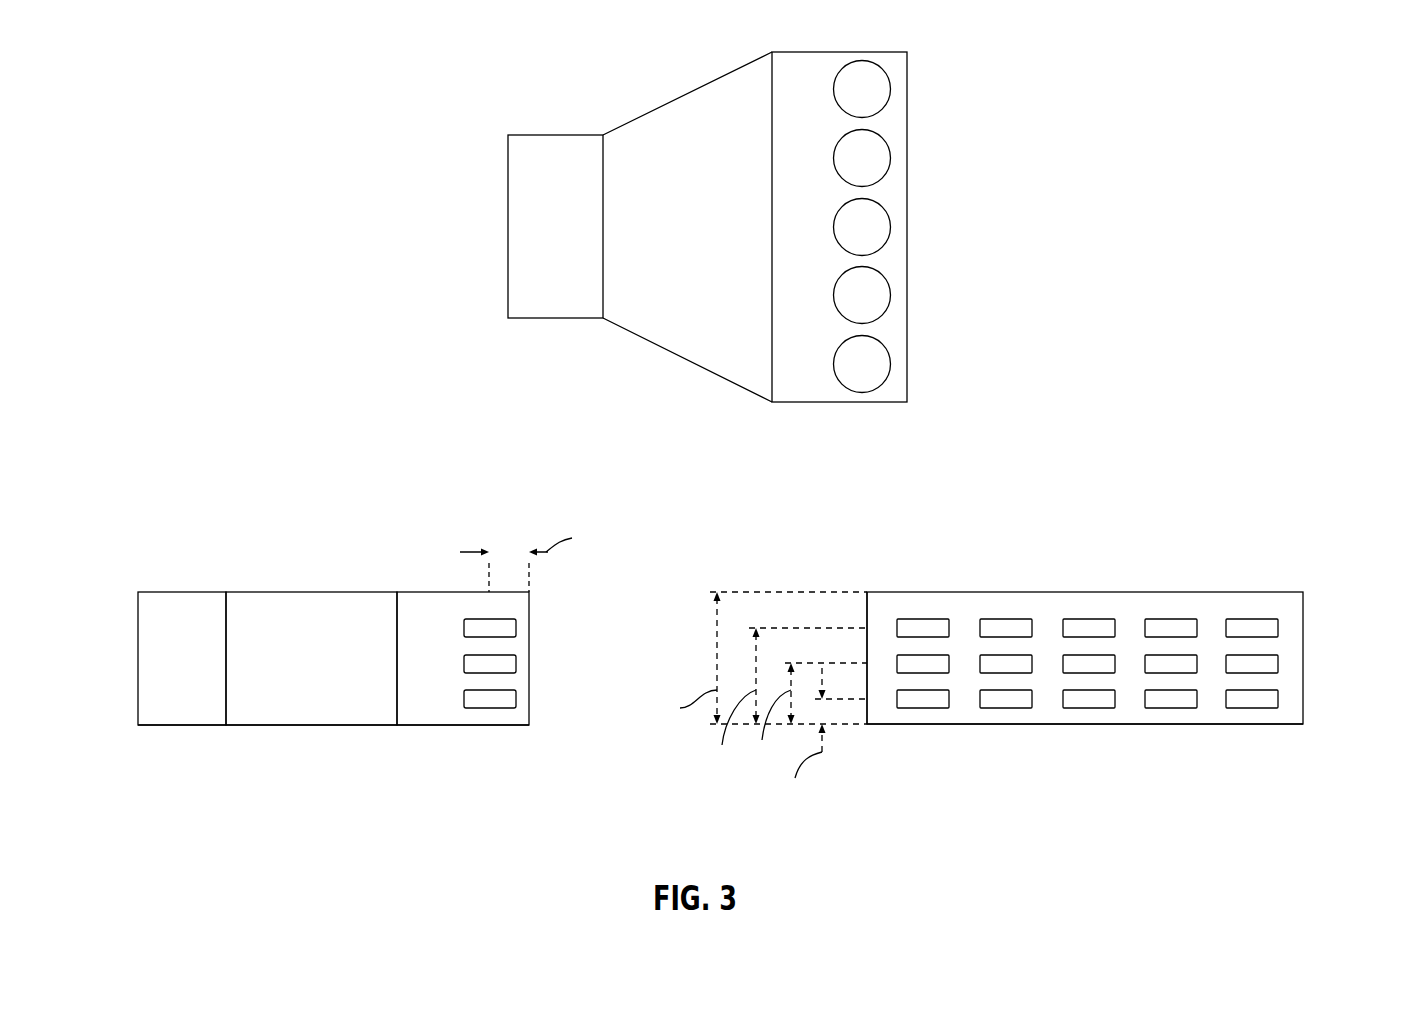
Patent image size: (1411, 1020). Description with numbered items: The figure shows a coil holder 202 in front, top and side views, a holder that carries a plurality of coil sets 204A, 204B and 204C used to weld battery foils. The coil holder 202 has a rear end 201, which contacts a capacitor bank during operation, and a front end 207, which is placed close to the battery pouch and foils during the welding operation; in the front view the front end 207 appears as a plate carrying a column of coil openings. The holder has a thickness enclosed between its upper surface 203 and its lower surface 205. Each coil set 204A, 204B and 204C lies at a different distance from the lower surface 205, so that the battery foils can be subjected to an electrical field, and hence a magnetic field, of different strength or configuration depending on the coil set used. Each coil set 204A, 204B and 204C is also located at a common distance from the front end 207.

The rear end 201 is at (508, 215).
The coil holder 202 is at (513, 58).
The upper surface 203 is at (703, 108).
The coil set 204A is at (879, 70).
The coil set 204B is at (512, 668).
The coil set 204C is at (512, 702).
The lower surface 205 is at (252, 727).
The front end 207 is at (907, 194).